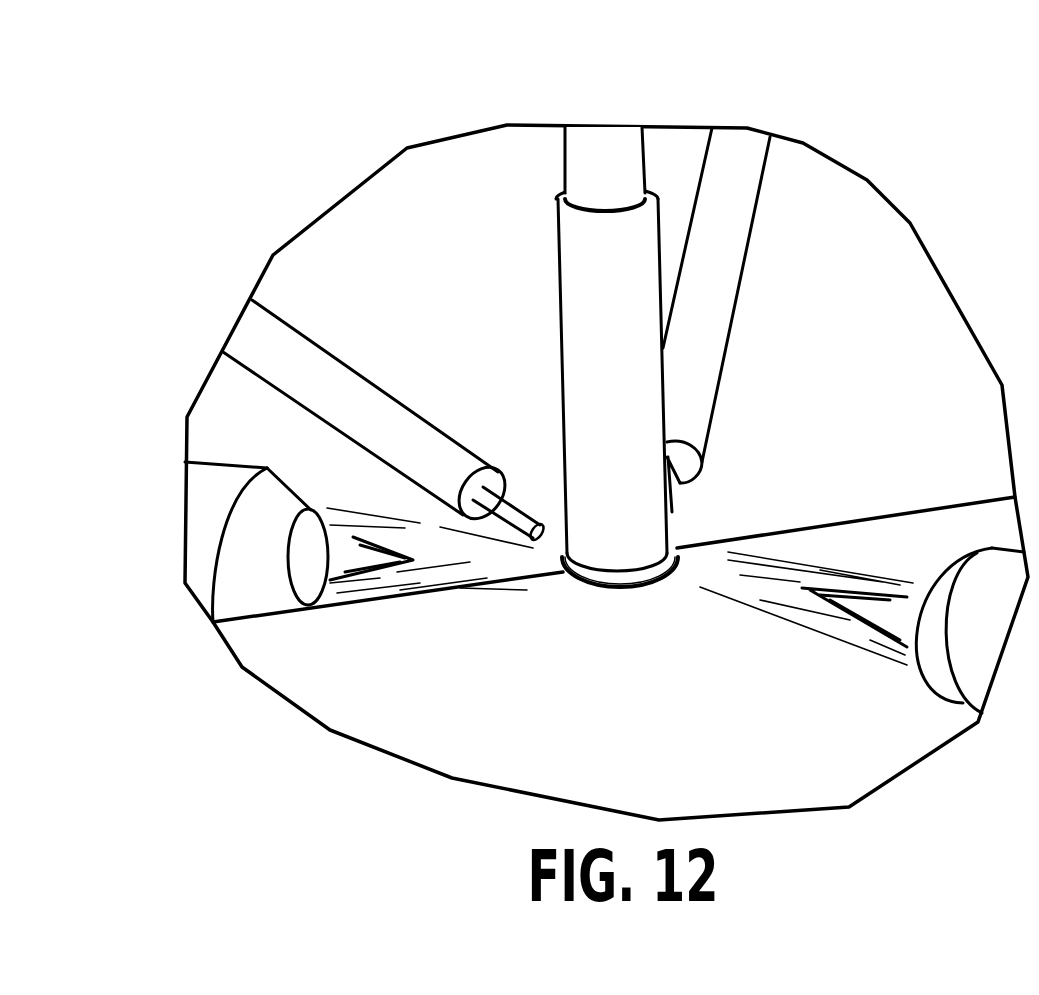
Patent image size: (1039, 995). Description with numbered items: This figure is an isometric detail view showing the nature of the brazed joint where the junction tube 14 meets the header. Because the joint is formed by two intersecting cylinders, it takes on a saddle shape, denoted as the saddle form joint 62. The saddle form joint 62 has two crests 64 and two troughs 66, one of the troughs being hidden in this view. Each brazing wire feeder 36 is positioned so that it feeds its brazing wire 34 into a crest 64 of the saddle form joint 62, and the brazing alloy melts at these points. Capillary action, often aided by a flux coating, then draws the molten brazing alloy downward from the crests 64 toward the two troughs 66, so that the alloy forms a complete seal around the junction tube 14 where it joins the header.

The junction tube 14 is at (570, 312).
The brazing wire feeder 36 is at (398, 398).
The brazing wire 34 is at (540, 522).
The saddle form joint 62 is at (597, 587).
The crest 64 is at (567, 557).
The trough 66 is at (633, 588).